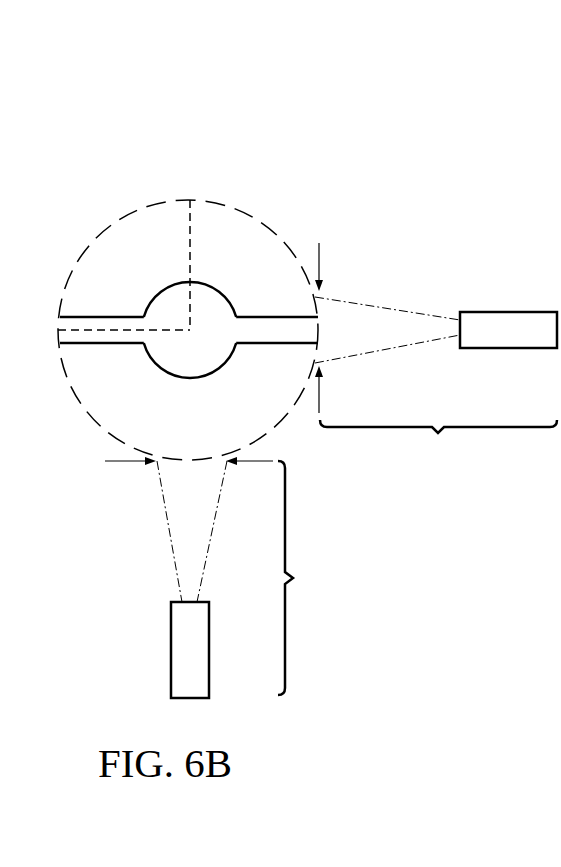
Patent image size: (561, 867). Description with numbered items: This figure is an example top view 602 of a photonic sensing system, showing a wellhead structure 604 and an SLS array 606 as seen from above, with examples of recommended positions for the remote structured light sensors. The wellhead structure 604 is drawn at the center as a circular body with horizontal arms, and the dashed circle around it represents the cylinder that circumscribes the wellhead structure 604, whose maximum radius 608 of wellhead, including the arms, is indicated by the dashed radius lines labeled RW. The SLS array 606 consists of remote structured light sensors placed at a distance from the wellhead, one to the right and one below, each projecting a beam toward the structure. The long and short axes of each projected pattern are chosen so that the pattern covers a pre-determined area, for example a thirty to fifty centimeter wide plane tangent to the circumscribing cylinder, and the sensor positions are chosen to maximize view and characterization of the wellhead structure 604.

The top view 602 is at (344, 106).
The wellhead structure 604 is at (268, 219).
The SLS array 606 is at (417, 557).
The maximum radius of wellhead 608 is at (95, 330).